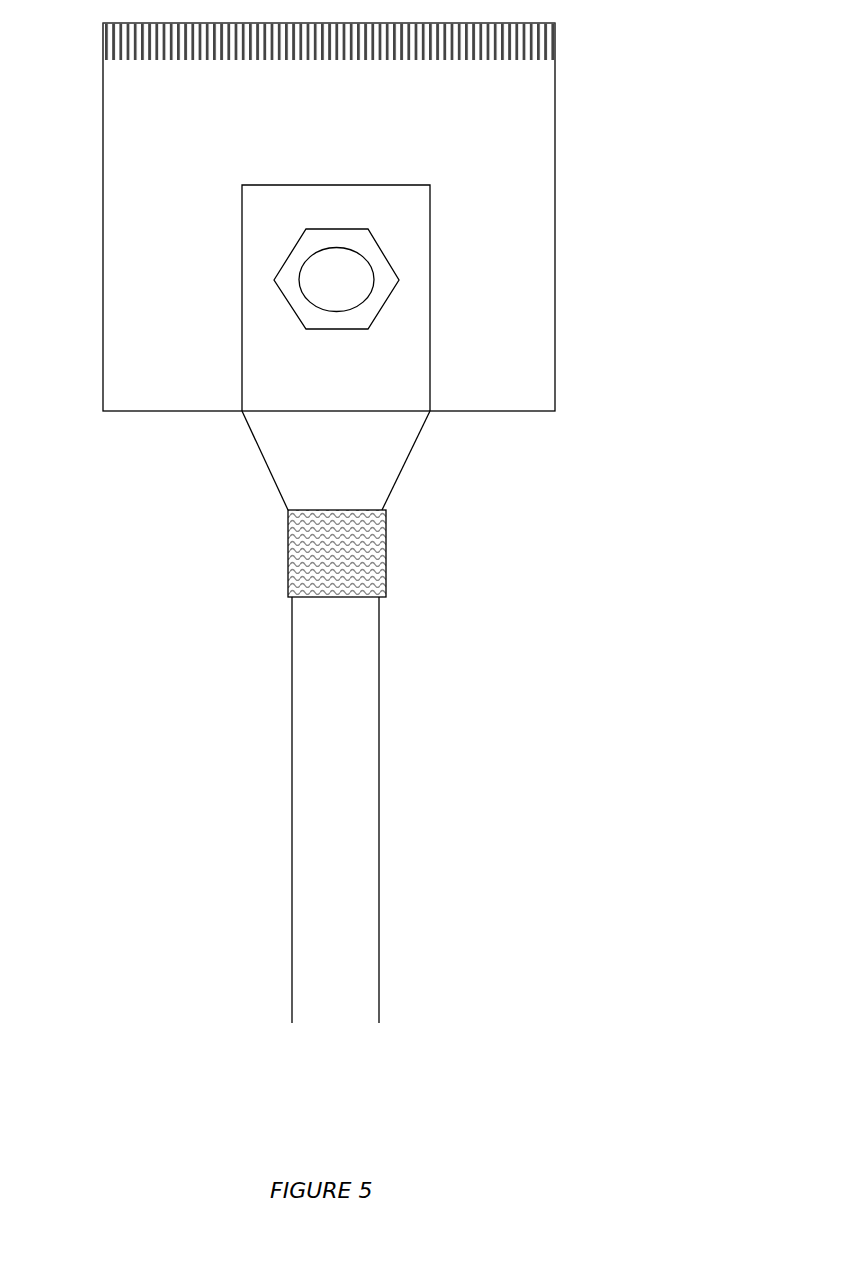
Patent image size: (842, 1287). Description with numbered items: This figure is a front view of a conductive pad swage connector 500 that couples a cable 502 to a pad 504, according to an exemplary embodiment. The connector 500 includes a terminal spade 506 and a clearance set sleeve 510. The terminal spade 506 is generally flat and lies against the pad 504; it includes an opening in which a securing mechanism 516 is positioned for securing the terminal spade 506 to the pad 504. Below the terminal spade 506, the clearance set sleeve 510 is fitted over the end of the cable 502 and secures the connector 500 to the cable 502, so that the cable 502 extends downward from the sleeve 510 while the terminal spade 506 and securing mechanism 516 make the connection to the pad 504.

The conductive pad swage connector 500 is at (250, 449).
The cable 502 is at (354, 773).
The pad 504 is at (529, 110).
The terminal spade 506 is at (392, 373).
The clearance set sleeve 510 is at (367, 547).
The securing mechanism 516 is at (354, 273).